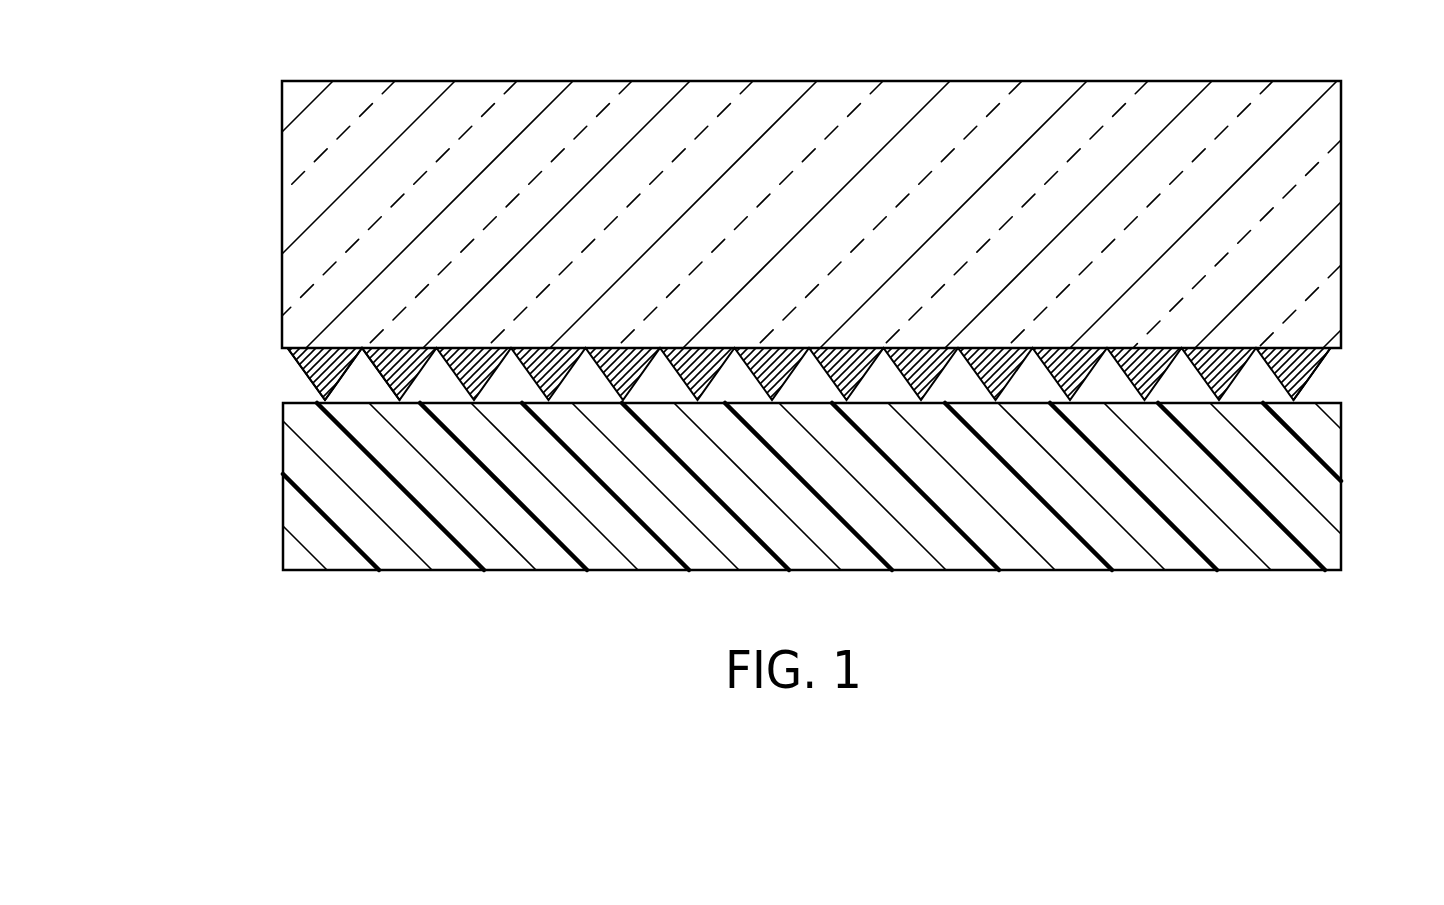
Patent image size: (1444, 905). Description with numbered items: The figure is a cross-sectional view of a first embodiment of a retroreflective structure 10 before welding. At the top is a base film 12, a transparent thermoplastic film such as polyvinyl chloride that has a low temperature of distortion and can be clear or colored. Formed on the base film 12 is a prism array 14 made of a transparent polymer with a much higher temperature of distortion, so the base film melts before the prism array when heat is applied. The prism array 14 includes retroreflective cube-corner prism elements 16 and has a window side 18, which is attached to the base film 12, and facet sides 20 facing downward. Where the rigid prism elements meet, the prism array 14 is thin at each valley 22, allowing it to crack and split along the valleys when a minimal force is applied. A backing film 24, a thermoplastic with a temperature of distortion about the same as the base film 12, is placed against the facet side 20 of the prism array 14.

The retroreflective structure 10 is at (263, 147).
The base film 12 is at (1113, 81).
The prism array 14 is at (1318, 385).
The retroreflective cube-corner prism elements 16 is at (1323, 367).
The window side 18 is at (307, 347).
The facet sides 20 is at (310, 378).
The valley 22 is at (363, 350).
The backing film 24 is at (488, 570).